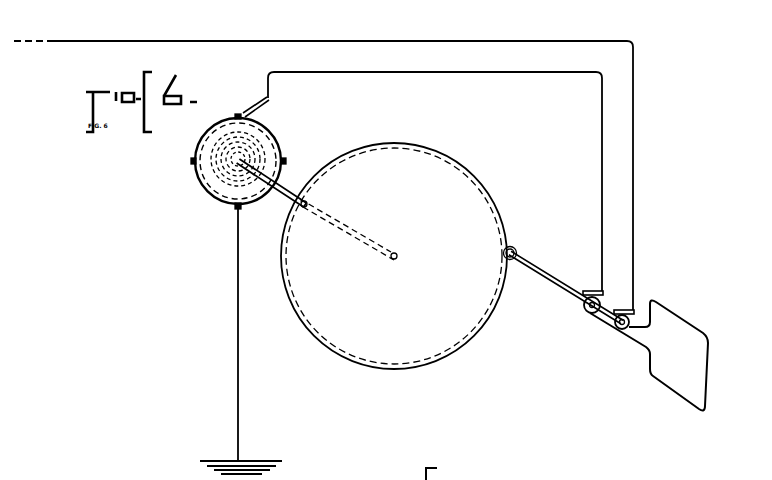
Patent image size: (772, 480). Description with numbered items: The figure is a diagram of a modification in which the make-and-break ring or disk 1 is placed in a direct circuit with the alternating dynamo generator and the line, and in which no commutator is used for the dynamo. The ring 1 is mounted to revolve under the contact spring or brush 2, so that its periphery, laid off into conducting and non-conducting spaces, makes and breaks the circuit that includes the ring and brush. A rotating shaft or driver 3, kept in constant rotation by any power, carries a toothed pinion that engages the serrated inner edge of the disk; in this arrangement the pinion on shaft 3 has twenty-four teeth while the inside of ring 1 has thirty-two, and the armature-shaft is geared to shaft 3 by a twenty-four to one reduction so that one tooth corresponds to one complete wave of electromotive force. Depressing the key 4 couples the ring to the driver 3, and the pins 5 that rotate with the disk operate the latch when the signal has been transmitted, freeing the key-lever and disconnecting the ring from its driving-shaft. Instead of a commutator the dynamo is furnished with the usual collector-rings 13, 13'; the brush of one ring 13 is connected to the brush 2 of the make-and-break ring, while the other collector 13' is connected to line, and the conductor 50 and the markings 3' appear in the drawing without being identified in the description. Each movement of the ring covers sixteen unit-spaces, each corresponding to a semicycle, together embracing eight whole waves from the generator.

The wire/conductor 50 is at (323, 165).
The contact spring or brush 2 is at (261, 106).
The make-and-break ring or disk 1 is at (275, 146).
The rotating shaft or driver 3 is at (238, 159).
The spring end 3' is at (217, 134).
The key 4 is at (261, 150).
The pins 5 is at (191, 161).
The collector-ring 13 is at (589, 295).
The collector-ring 13' is at (623, 314).